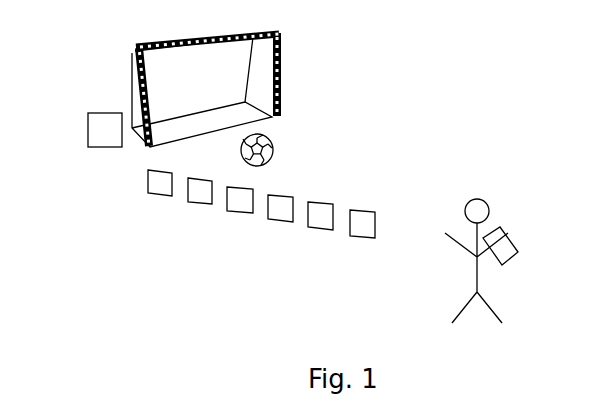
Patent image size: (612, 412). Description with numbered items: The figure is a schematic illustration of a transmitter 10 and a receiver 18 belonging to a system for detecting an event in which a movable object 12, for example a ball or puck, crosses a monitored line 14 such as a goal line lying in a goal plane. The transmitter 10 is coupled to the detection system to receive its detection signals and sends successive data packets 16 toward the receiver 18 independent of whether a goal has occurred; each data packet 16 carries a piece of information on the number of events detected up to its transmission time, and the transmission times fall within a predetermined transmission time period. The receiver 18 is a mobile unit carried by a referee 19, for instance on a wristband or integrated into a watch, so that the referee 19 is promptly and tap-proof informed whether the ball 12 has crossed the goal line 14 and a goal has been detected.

The transmitter 10 is at (88, 132).
The movable object 12 is at (273, 153).
The monitored line 14 is at (270, 128).
The data packets 16 is at (158, 192).
The receiver 18 is at (498, 218).
The referee 19 is at (473, 232).